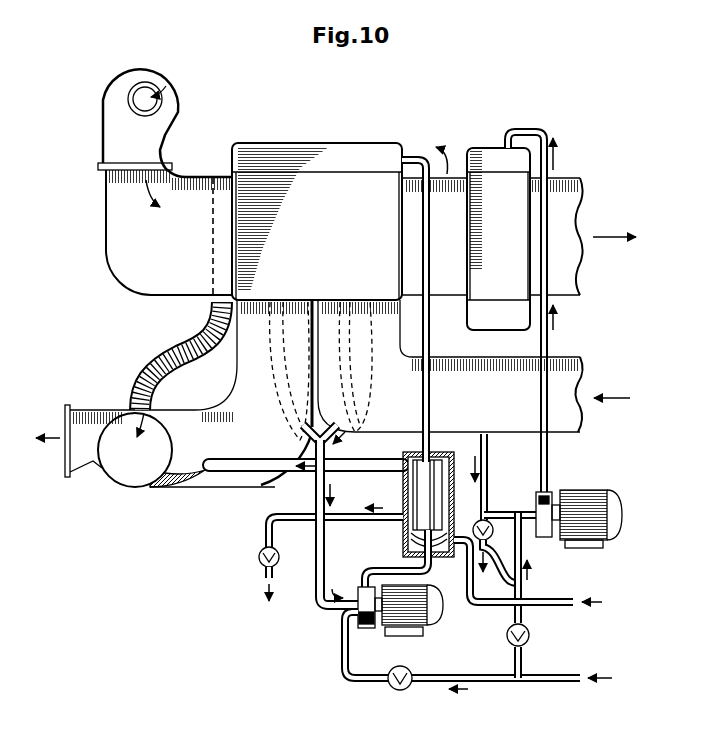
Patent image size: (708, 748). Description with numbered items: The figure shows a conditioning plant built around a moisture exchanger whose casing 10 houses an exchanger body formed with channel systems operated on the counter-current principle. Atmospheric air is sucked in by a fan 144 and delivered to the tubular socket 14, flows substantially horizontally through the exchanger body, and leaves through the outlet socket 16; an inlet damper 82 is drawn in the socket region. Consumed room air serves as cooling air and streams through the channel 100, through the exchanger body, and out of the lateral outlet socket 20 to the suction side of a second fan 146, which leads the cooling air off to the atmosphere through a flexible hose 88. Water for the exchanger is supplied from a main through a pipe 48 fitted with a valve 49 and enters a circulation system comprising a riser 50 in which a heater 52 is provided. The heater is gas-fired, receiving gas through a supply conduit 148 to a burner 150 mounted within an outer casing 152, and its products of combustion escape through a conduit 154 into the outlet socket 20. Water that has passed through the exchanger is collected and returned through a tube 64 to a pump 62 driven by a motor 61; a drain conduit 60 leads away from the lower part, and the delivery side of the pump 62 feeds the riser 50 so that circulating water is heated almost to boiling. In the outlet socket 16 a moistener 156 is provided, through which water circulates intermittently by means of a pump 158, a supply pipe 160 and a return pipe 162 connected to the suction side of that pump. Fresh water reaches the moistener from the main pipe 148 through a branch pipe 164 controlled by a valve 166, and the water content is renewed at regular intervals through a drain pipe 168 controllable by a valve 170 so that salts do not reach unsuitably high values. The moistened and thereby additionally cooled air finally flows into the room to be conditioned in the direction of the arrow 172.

The casing 10 is at (332, 190).
The tube socket 14 is at (132, 292).
The outlet socket 16 is at (576, 186).
The lateral socket 20 is at (213, 489).
The pipe 48 is at (503, 682).
The valve 49 is at (395, 688).
The riser 50 is at (432, 353).
The heater 52 is at (418, 460).
The drain conduit 60 is at (328, 554).
The motor 61 is at (440, 626).
The pump 62 is at (357, 620).
The tube 64 is at (287, 380).
The damper 82 is at (215, 178).
The flexible hose 88 is at (185, 350).
The channel 100 is at (582, 366).
The fan 144 is at (143, 64).
The fan 146 is at (128, 478).
The gas supply conduit 148 is at (565, 600).
The burner 150 is at (455, 513).
The outer casing 152 is at (403, 490).
The conduit 154 is at (352, 466).
The moistener 156 is at (479, 186).
The pump 158 is at (552, 496).
The supply pipe 160 is at (548, 318).
The return pipe 162 is at (500, 436).
The branch pipe 164 is at (522, 660).
The valve 166 is at (530, 637).
The drain pipe 168 is at (501, 568).
The valve 170 is at (497, 536).
The arrow 172 is at (612, 237).